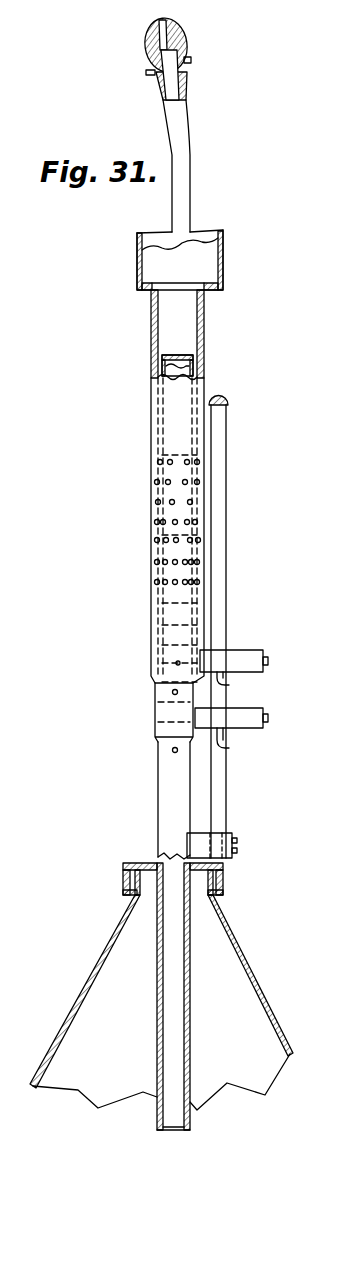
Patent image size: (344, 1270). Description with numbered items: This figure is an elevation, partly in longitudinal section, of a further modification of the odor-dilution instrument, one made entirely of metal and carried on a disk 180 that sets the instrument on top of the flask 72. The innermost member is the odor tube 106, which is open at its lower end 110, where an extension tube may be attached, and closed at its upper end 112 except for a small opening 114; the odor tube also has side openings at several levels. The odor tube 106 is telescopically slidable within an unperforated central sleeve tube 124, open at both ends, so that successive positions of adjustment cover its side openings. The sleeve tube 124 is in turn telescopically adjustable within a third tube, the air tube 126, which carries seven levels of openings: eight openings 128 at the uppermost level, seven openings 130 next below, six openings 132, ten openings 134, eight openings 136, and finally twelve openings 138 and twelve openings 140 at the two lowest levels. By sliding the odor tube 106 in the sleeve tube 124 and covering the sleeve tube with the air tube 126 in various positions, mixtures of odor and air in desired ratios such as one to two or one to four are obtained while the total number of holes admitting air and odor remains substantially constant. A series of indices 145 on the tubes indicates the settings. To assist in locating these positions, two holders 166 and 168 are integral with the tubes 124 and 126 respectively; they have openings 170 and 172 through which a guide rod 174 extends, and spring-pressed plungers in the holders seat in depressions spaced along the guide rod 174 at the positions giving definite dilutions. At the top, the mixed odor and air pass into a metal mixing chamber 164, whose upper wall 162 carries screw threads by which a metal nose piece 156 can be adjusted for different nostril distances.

The flask 72 is at (95, 978).
The odor tube 106 is at (176, 990).
The lower open end 110 is at (168, 1131).
The upper end 112 is at (182, 355).
The small opening 114 is at (178, 355).
The central sleeve tube 124 is at (153, 712).
The air tube 126 is at (150, 407).
The openings 128 is at (158, 462).
The openings 130 is at (156, 485).
The openings 132 is at (175, 501).
The openings 134 is at (158, 524).
The openings 136 is at (185, 543).
The openings 138 is at (158, 565).
The openings 140 is at (187, 585).
The indices 145 is at (168, 643).
The metal nose piece 156 is at (184, 147).
The upper wall 162 is at (191, 231).
The metal mixing chamber 164 is at (217, 265).
The holder 166 is at (262, 708).
The holder 168 is at (252, 650).
The opening 170 is at (224, 746).
The opening 172 is at (228, 685).
The guide rod 174 is at (227, 446).
The disk 180 is at (224, 893).